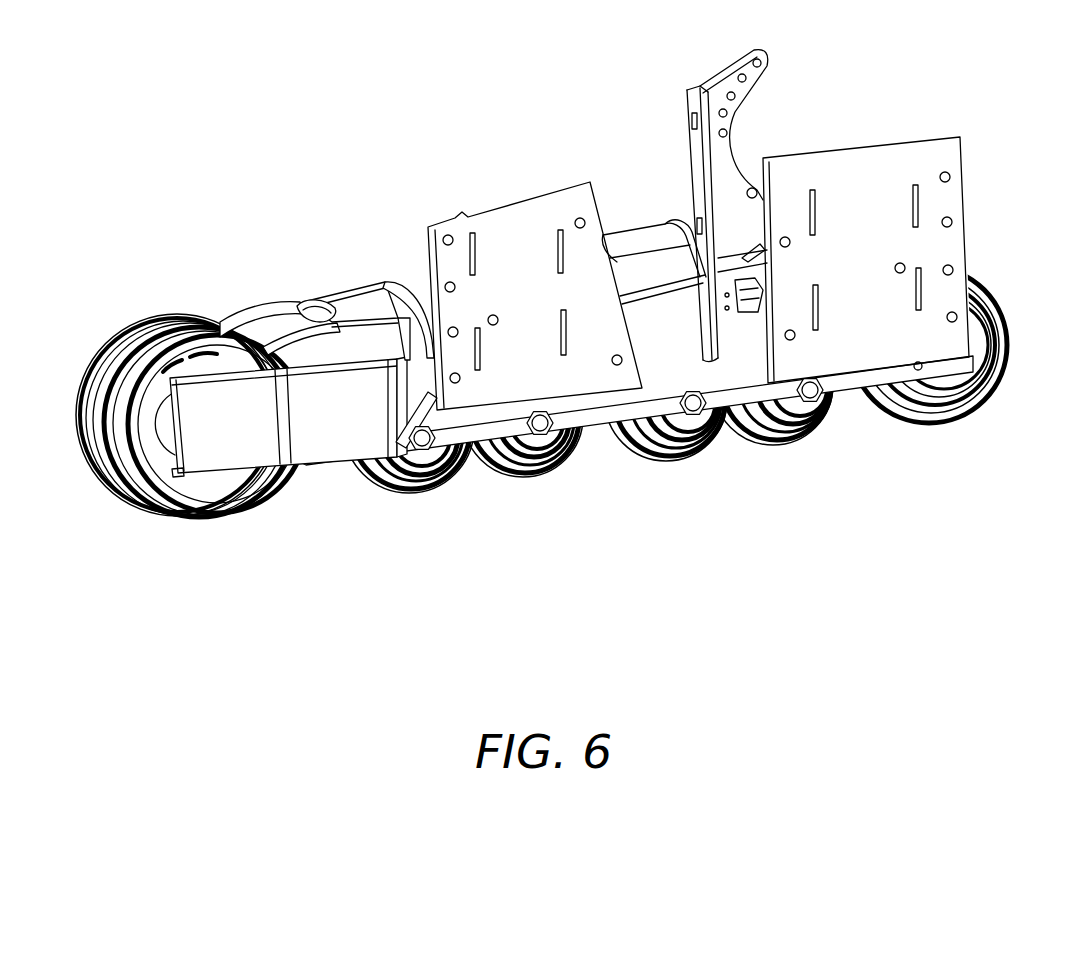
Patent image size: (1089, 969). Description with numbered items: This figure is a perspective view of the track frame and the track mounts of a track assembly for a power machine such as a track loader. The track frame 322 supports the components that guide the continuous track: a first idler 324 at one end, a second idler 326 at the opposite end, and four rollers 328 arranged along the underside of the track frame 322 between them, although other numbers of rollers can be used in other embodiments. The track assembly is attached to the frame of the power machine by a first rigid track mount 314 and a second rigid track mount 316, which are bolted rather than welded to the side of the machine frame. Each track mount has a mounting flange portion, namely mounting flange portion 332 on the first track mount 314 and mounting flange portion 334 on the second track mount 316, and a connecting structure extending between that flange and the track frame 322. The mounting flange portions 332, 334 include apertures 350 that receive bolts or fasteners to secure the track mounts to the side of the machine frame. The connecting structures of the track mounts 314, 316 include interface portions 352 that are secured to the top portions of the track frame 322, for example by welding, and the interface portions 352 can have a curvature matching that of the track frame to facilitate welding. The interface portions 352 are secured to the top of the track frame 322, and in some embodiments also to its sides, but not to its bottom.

The first rigid track mount 314 is at (877, 152).
The second rigid track mount 316 is at (487, 210).
The track frame 322 is at (666, 236).
The first idler 324 is at (213, 505).
The second idler 326 is at (953, 423).
The rollers 328 is at (450, 480).
The mounting flange portion 332 is at (840, 165).
The mounting flange portion 334 is at (587, 373).
The apertures 350 is at (447, 236).
The interface portions 352 is at (415, 270).